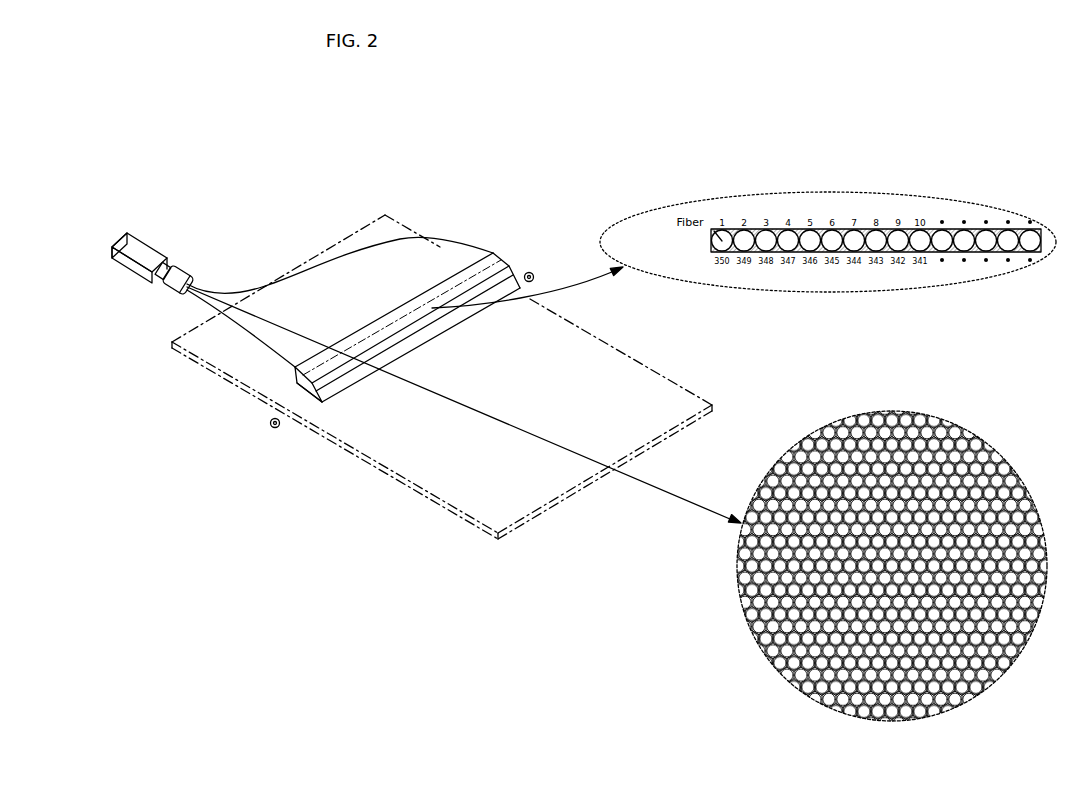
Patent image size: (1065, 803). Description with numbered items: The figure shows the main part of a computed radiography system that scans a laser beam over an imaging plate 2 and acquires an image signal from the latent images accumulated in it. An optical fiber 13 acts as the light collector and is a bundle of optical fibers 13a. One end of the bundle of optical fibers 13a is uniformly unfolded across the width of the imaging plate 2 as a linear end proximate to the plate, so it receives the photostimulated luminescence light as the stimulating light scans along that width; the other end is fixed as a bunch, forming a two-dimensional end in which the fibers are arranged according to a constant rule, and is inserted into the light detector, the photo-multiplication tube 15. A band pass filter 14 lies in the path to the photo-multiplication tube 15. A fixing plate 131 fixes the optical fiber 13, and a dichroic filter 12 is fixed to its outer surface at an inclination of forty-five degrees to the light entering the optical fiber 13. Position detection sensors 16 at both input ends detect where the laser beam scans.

The imaging plate 2 is at (613, 343).
The dichroic filter 12 is at (512, 266).
The optical fiber 13 is at (426, 243).
The fixing plate 131 is at (293, 383).
The bundle of optical fibers 13a is at (875, 412).
The band pass filter 14 is at (171, 262).
The photo-multiplication tube 15 is at (148, 246).
The position detection sensor 16 is at (533, 272).